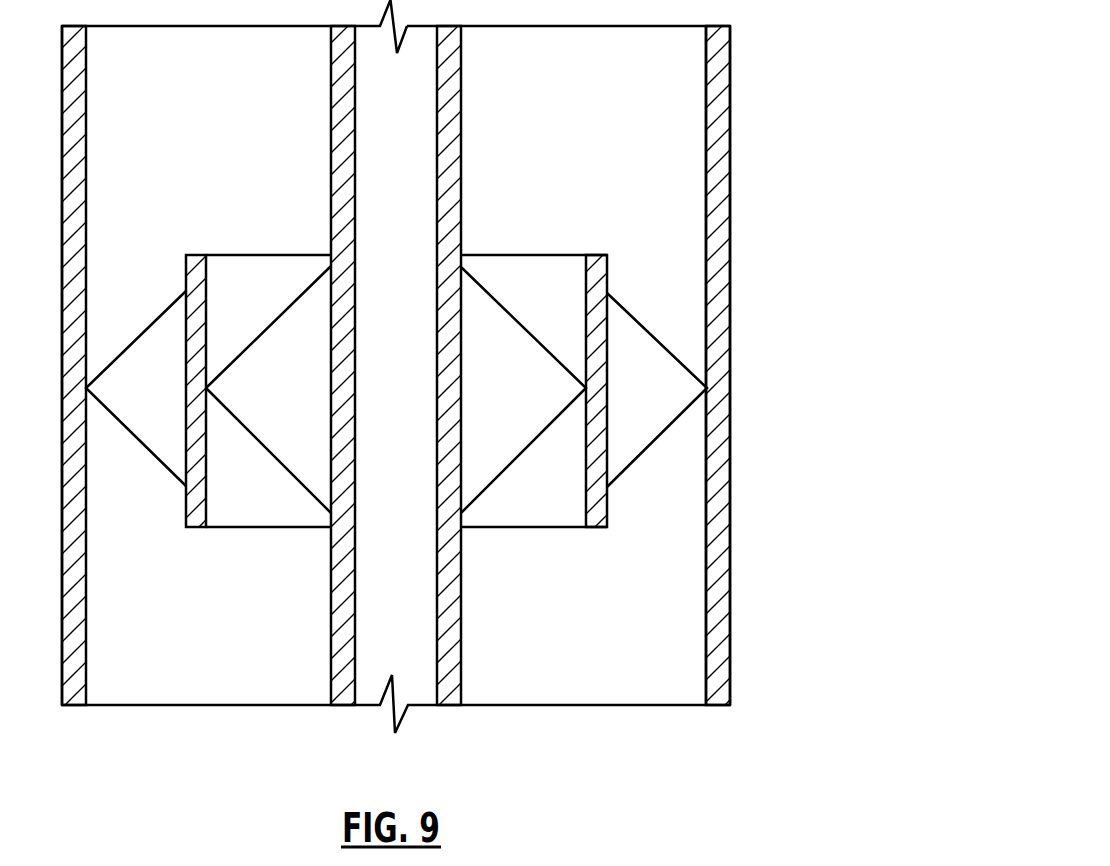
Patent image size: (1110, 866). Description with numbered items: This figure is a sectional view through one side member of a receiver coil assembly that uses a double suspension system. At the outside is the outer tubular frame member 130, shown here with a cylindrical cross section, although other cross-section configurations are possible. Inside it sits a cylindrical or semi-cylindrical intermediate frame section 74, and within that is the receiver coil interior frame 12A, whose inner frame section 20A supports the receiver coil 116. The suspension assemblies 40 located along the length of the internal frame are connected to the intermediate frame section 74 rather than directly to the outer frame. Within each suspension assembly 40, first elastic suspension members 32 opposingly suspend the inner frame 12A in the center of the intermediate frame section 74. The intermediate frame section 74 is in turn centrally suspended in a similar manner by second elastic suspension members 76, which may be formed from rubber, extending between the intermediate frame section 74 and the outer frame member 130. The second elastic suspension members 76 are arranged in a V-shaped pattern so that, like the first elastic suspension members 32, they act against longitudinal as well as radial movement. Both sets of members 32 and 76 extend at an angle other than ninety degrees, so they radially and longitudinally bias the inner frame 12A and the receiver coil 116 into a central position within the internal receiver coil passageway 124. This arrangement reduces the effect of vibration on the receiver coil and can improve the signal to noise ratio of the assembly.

The receiver coil interior frame 12A is at (448, 135).
The inner frame section 20A is at (337, 78).
The first elastic suspension members 32 is at (268, 332).
The suspension assemblies 40 is at (250, 298).
The intermediate frame section 74 is at (196, 528).
The second elastic suspension members 76 is at (142, 332).
The receiver coil 116 is at (417, 87).
The passageway 124 is at (230, 676).
The outer tubular frame member 130 is at (731, 62).